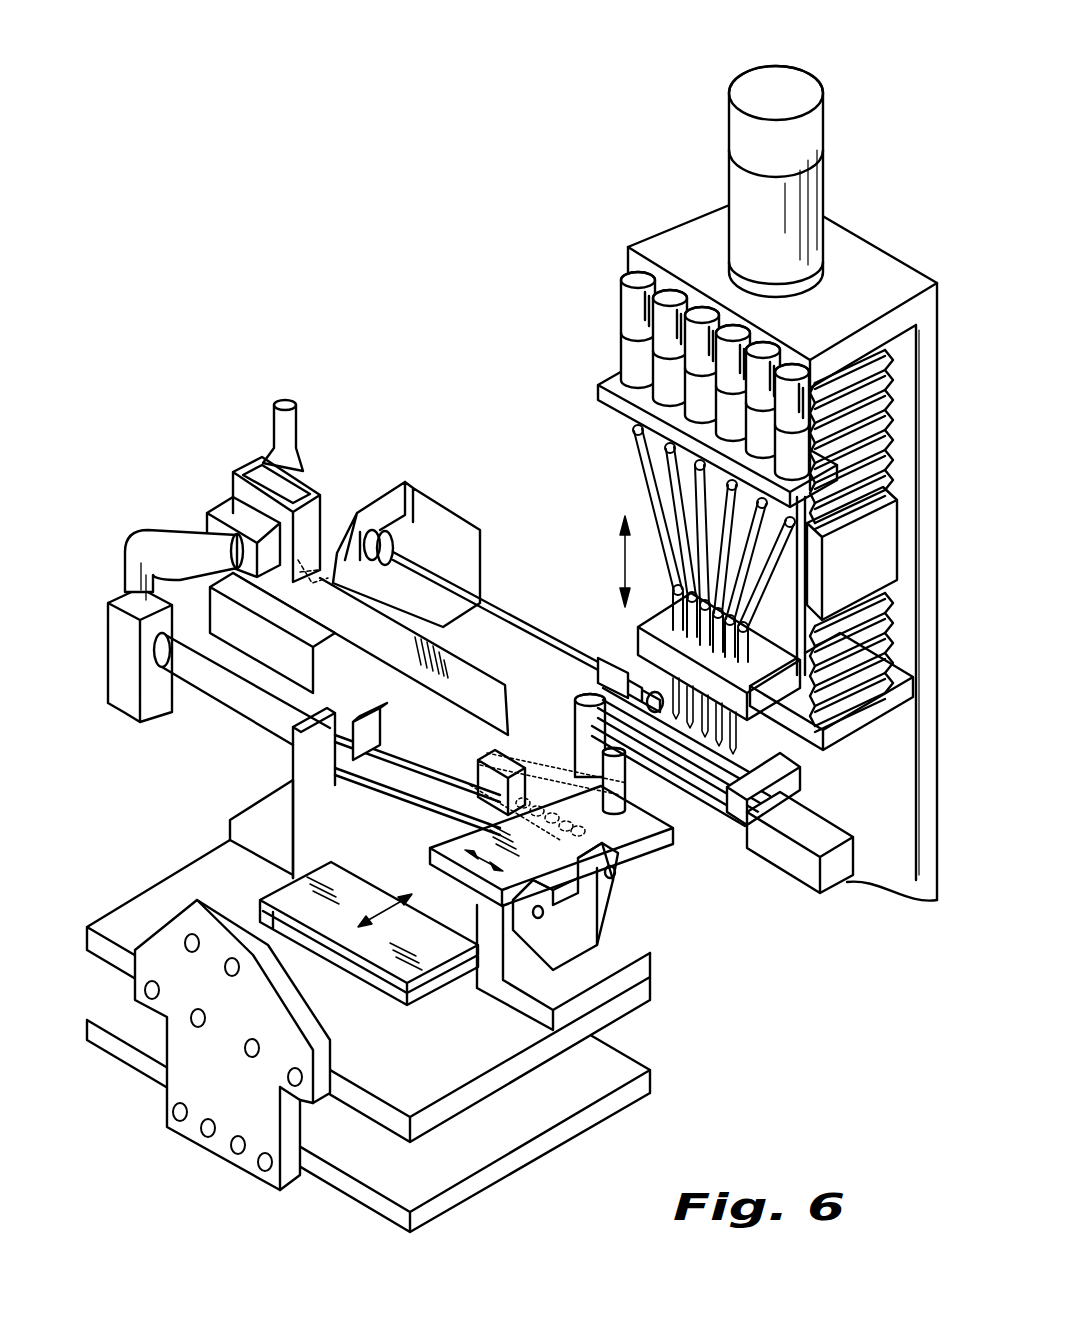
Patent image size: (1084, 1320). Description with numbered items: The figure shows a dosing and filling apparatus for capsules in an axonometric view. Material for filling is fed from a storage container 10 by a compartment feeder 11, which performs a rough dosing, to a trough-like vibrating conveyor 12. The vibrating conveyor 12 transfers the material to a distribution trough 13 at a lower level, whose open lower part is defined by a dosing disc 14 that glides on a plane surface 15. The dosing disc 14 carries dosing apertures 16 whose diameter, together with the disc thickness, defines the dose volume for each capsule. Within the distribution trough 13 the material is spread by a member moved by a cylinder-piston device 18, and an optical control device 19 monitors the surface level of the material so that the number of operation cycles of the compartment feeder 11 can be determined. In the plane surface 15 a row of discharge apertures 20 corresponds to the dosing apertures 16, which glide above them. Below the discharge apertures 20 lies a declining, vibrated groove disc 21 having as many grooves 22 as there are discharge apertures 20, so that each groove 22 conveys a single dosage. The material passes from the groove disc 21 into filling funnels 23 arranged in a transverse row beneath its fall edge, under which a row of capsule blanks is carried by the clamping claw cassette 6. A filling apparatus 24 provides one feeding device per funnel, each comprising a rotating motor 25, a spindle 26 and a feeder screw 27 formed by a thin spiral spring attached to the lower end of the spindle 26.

The clamping claw cassette 6 is at (800, 862).
The storage container 10 is at (252, 470).
The compartment feeder 11 is at (305, 568).
The vibrating conveyor 12 is at (476, 683).
The distribution trough 13 is at (498, 743).
The dosing disc 14 is at (265, 890).
The plane surface 15 is at (550, 760).
The dosing apertures 16 is at (526, 822).
The cylinder-piston device 18 is at (238, 688).
The optical control device 19 is at (640, 780).
The discharge apertures 20 is at (574, 755).
The groove disc 21 is at (702, 795).
The grooves 22 is at (740, 790).
The filling funnels 23 is at (770, 792).
The filling apparatus 24 is at (507, 450).
The rotating motor 25 is at (636, 322).
The spindle 26 is at (660, 472).
The feeder screw 27 is at (760, 725).